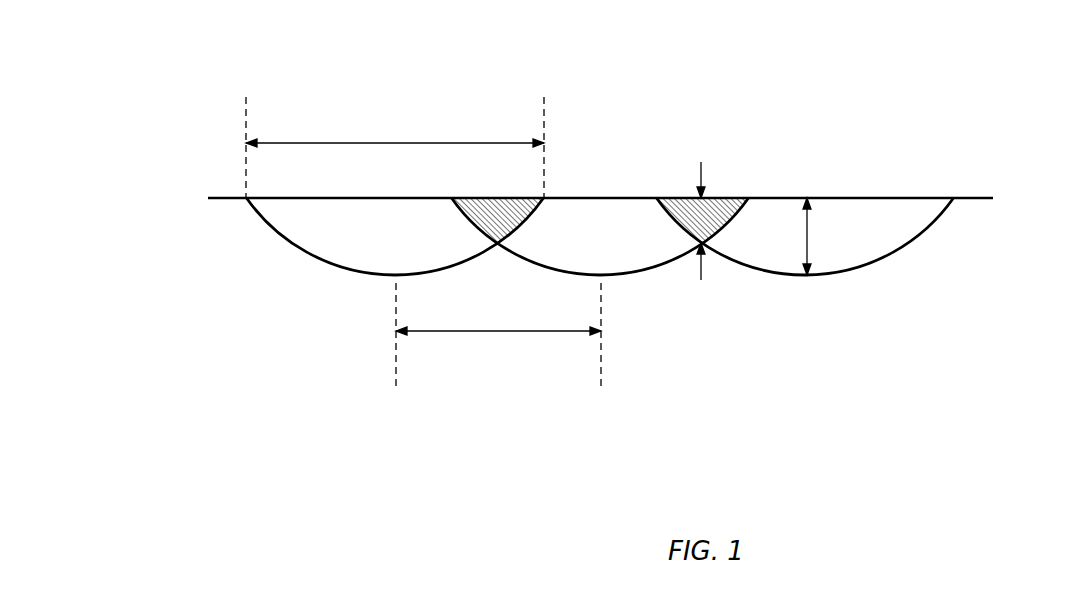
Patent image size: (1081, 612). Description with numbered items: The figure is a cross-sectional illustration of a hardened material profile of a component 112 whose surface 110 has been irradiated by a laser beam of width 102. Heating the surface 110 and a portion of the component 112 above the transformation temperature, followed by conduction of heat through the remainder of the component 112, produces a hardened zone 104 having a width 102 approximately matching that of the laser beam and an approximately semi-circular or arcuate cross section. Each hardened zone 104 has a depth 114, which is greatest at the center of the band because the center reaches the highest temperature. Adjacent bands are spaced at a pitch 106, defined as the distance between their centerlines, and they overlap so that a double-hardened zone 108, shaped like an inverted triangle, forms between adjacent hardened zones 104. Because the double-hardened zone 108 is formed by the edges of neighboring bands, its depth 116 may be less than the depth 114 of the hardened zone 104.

The width 102 is at (362, 140).
The hardened zone 104 is at (320, 238).
The pitch 106 is at (480, 331).
The double-hardened zone 108 is at (522, 198).
The surface 110 is at (887, 197).
The component 112 is at (975, 228).
The depth 114 is at (808, 223).
The depth 116 is at (702, 167).